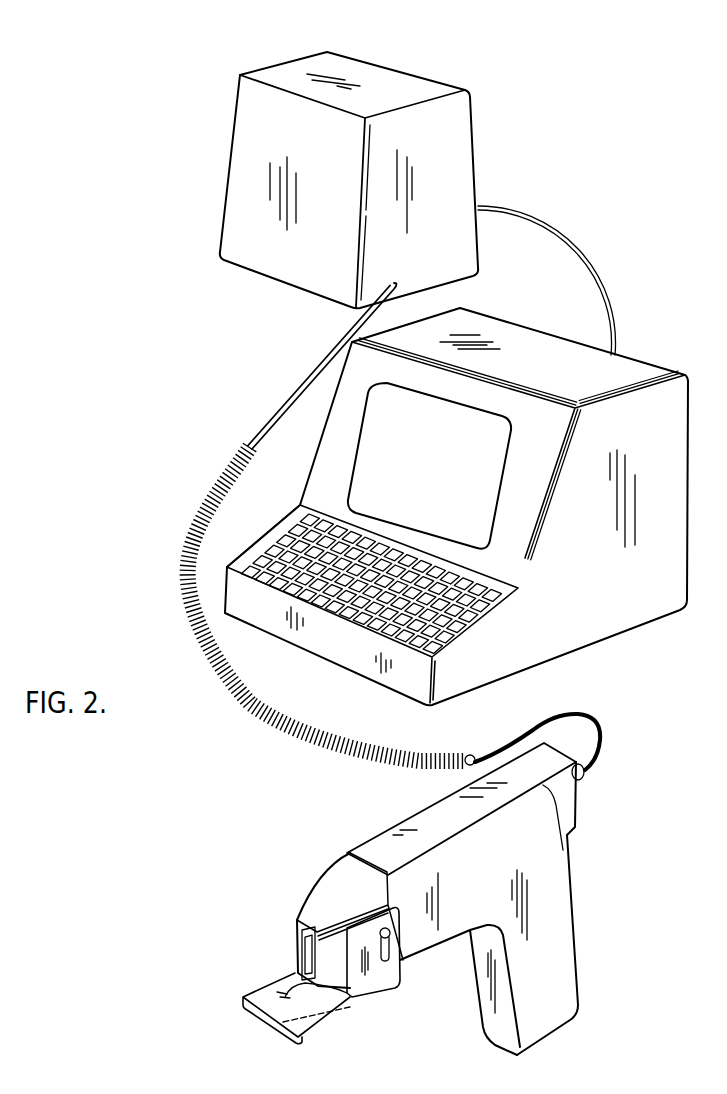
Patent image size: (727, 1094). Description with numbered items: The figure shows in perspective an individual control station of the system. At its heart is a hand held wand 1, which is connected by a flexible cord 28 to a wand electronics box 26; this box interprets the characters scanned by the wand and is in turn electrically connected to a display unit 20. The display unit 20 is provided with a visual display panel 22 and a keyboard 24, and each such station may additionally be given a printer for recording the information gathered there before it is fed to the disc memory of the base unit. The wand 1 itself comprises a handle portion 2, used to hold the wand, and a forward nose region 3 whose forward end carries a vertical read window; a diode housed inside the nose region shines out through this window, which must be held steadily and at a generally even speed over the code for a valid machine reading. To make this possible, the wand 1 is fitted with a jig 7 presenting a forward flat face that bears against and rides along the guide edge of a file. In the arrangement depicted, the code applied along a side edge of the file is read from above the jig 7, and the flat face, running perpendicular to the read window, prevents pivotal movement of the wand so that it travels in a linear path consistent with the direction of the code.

The hand held wand 1 is at (570, 888).
The handle portion 2 is at (563, 985).
The forward nose region 3 is at (318, 890).
The jig 7 is at (388, 983).
The display unit 20 is at (540, 342).
The visual display panel 22 is at (370, 455).
The keyboard 24 is at (483, 600).
The wand electronics box 26 is at (412, 77).
The flexible cord 28 is at (300, 743).